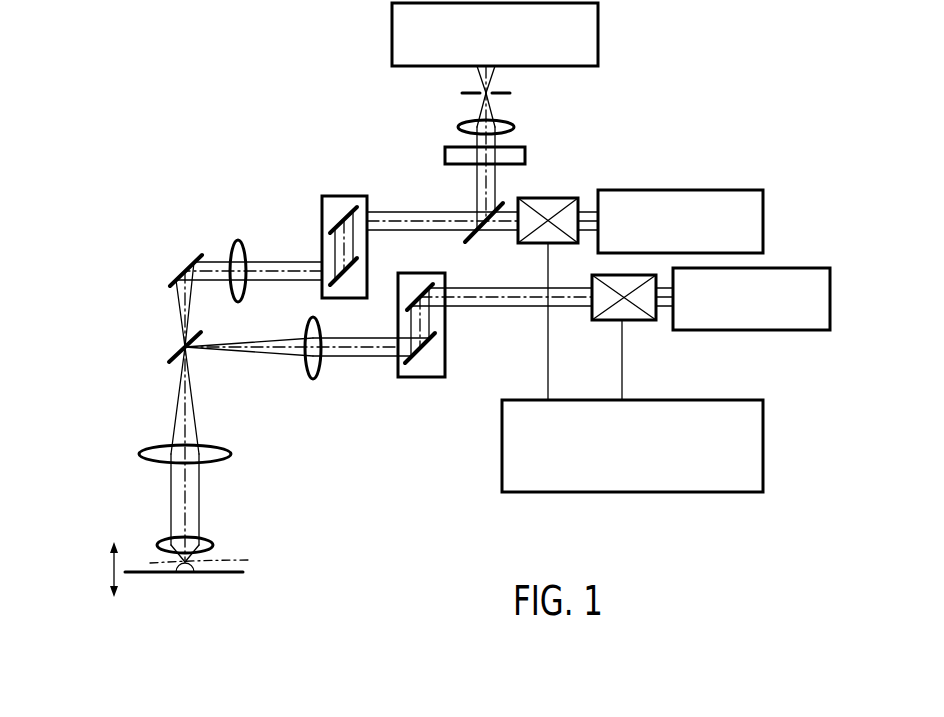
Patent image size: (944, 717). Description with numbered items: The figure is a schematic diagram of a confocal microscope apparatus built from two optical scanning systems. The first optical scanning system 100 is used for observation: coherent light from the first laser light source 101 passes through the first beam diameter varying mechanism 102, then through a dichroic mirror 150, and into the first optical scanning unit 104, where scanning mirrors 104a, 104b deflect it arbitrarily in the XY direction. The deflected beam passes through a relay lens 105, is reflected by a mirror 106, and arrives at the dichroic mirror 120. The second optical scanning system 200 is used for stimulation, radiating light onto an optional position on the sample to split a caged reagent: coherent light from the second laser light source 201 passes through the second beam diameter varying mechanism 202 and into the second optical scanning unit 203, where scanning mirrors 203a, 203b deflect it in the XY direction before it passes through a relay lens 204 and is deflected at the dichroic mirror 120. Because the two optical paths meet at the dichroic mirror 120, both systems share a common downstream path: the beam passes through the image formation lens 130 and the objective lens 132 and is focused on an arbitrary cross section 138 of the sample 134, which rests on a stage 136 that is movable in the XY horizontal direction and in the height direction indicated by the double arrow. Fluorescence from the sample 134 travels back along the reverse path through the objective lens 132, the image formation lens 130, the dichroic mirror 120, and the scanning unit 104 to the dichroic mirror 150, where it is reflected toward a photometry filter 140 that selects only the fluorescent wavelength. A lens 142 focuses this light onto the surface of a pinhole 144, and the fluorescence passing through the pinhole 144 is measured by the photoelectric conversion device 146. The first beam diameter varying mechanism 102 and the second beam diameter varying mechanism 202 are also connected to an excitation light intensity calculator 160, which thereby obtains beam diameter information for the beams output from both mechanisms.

The first optical scanning system 100 is at (386, 165).
The first laser light source 101 is at (672, 190).
The first beam diameter varying mechanism 102 is at (572, 195).
The first optical scanning unit 104 is at (337, 196).
The scanning mirror 104a is at (330, 226).
The scanning mirror 104b is at (345, 290).
The relay lens 105 is at (238, 240).
The mirror 106 is at (190, 258).
The dichroic mirror 120 is at (175, 350).
The image formation lens 130 is at (230, 452).
The objective lens 132 is at (200, 538).
The sample 134 is at (172, 570).
The stage 136 is at (223, 572).
The arbitrary cross section 138 is at (220, 560).
The photometry filter 140 is at (526, 151).
The lens 142 is at (511, 124).
The pinhole 144 is at (508, 92).
The photoelectric conversion device 146 is at (598, 38).
The dichroic mirror 150 is at (499, 202).
The excitation light intensity calculator 160 is at (502, 450).
The second optical scanning system 200 is at (646, 327).
The second laser light source 201 is at (798, 268).
The second beam diameter varying mechanism 202 is at (604, 320).
The second optical scanning unit 203 is at (412, 273).
The scanning mirror 203a is at (432, 283).
The scanning mirror 203b is at (435, 350).
The relay lens 204 is at (313, 380).